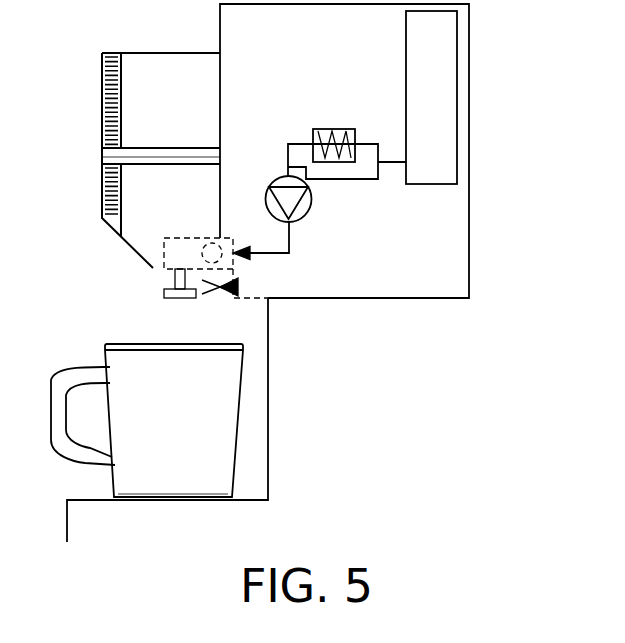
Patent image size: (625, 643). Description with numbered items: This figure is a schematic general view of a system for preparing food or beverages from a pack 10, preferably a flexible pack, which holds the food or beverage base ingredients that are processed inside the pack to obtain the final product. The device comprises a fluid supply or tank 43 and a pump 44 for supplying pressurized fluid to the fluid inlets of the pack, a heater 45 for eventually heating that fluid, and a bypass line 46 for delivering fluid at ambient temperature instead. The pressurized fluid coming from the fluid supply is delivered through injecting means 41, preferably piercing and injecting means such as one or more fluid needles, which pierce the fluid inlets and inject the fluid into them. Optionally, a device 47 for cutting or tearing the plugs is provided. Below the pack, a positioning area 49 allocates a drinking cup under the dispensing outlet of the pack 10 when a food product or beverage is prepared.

The pack 10 is at (175, 253).
The injecting means 41 is at (270, 255).
The fluid supply or tank 43 is at (432, 81).
The pump 44 is at (355, 223).
The heater 45 is at (331, 129).
The bypass line 46 is at (368, 179).
The device for cutting or tearing the plugs 47 is at (213, 292).
The positioning area 49 is at (158, 500).